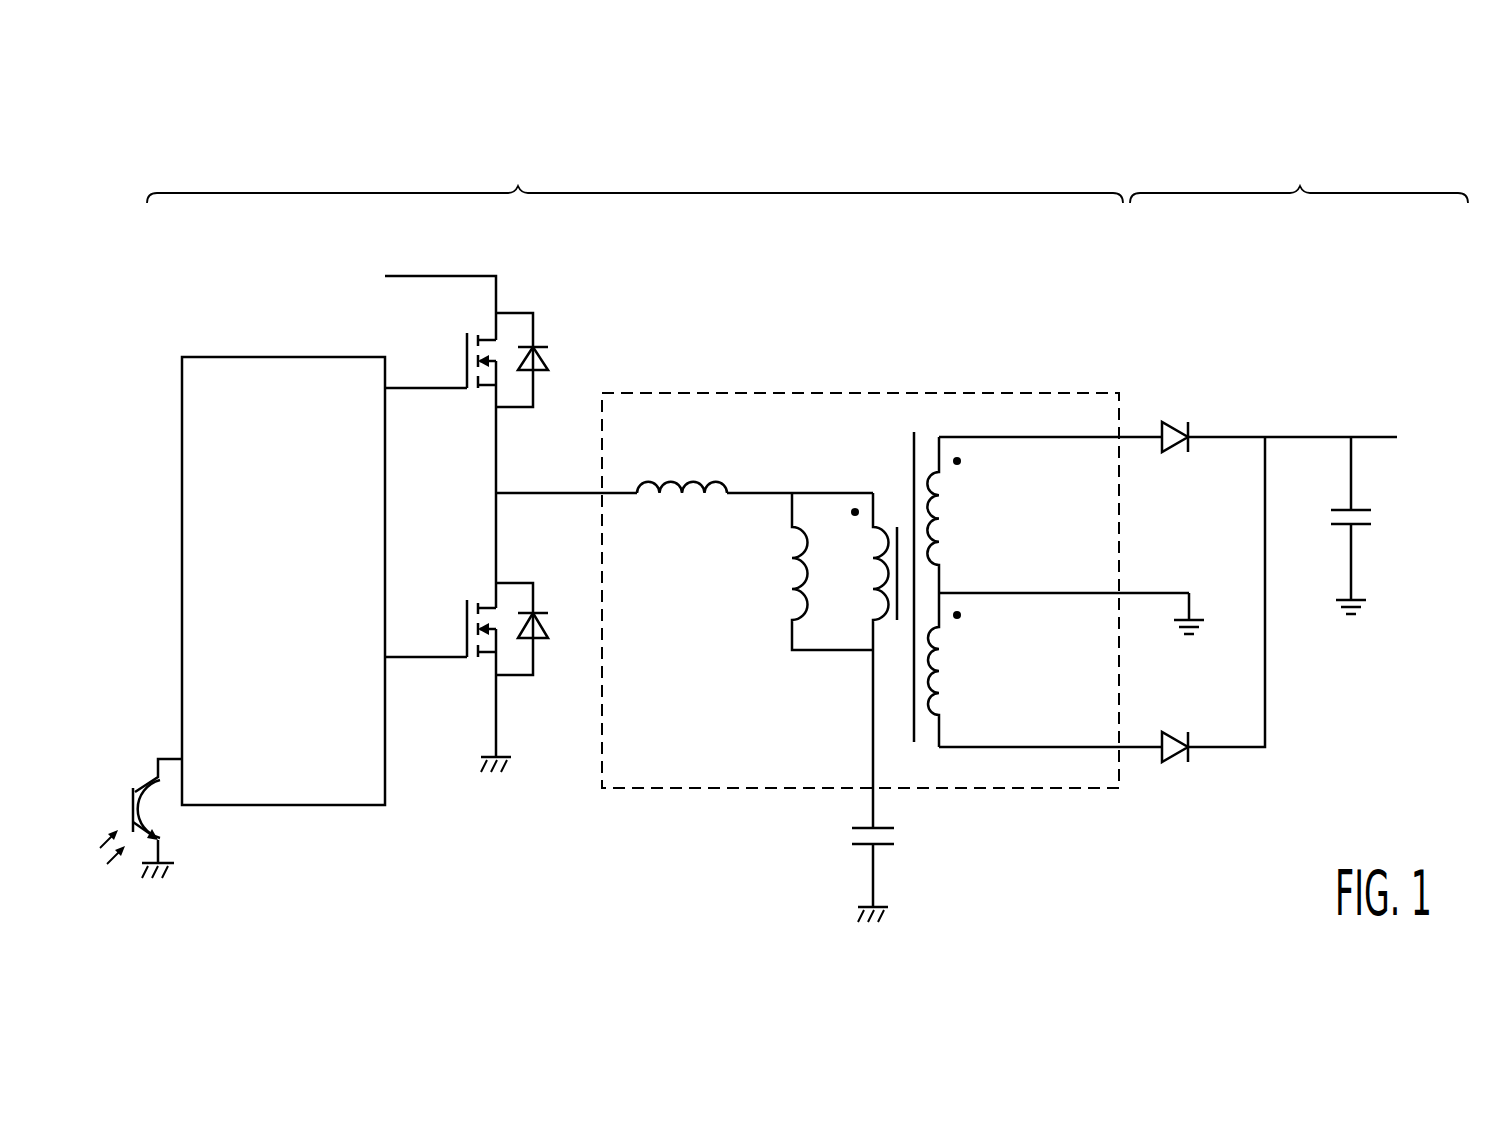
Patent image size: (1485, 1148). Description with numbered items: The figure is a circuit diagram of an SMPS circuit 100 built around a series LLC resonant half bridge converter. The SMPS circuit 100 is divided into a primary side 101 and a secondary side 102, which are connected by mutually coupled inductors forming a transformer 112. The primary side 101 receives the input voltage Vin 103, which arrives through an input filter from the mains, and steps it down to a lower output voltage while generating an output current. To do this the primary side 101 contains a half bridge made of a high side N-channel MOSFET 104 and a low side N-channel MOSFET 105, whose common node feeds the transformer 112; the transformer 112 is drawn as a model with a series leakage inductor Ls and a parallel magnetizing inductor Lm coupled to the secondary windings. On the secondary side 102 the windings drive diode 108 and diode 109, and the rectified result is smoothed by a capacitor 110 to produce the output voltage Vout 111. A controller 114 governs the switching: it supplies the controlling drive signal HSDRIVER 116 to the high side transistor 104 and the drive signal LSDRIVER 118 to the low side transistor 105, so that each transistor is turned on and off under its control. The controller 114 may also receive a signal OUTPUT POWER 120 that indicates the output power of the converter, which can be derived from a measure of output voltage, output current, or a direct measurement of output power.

The SMPS circuit 100 is at (1422, 153).
The primary side 101 is at (635, 176).
The secondary side 102 is at (1299, 177).
The input voltage Vin 103 is at (428, 245).
The high side N-channel MOSFET 104 is at (549, 353).
The low side N-channel MOSFET 105 is at (540, 640).
The diode 108 is at (1172, 422).
The diode 109 is at (1172, 762).
The output capacitor 110 is at (1365, 505).
The output voltage Vout 111 is at (1378, 410).
The transformer 112 is at (1048, 393).
The controller 114 is at (182, 418).
The HSDRIVER signal 116 is at (262, 383).
The LSDRIVER signal 118 is at (342, 640).
The OUTPUT POWER signal 120 is at (282, 775).